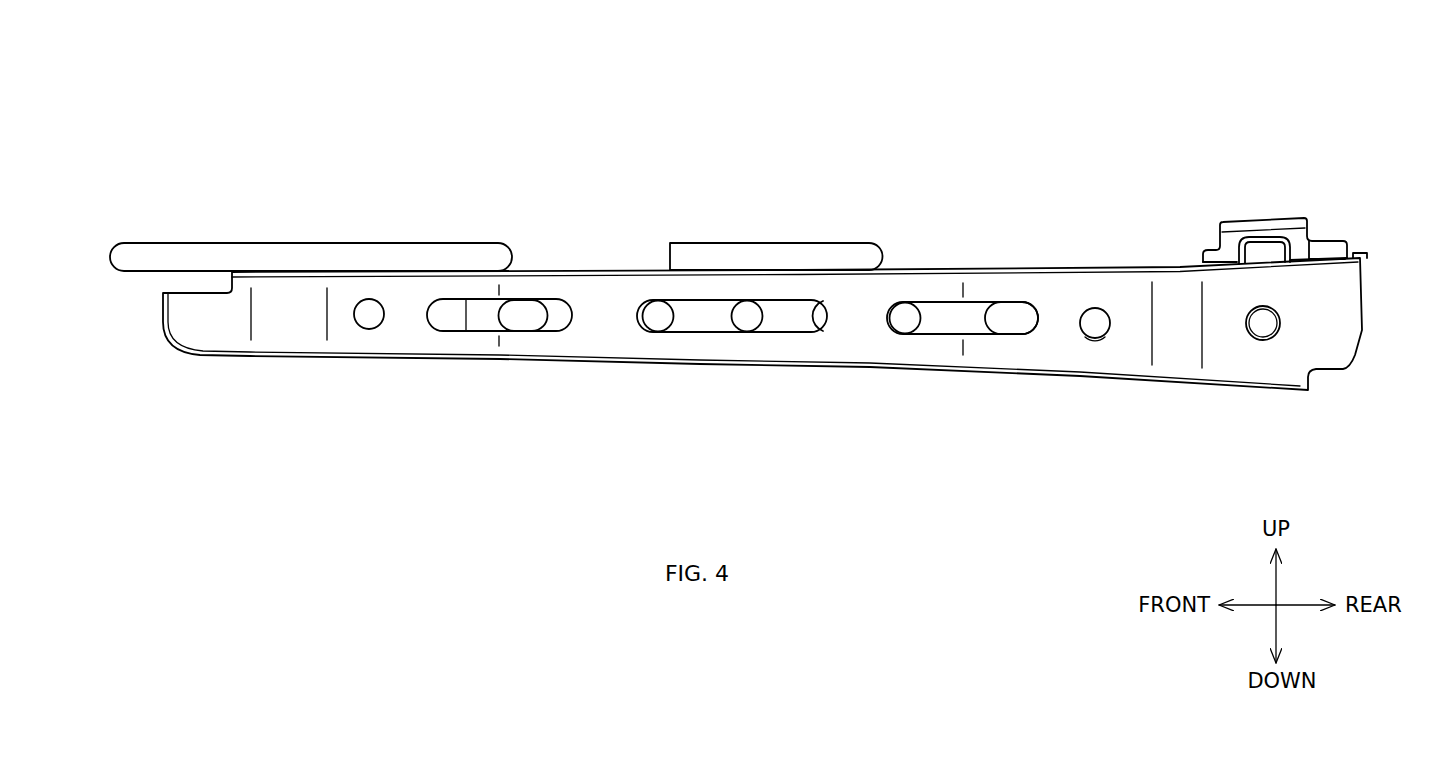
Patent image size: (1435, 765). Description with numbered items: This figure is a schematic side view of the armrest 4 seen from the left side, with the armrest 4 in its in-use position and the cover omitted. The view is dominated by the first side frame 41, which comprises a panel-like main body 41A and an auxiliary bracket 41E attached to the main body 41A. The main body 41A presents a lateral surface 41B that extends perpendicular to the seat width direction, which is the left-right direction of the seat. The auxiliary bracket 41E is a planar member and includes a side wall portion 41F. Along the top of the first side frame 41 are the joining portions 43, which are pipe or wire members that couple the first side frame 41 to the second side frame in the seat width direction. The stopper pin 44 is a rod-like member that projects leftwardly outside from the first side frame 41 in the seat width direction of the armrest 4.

The armrest 4 is at (466, 129).
The first side frame 41 is at (1368, 339).
The main body 41A is at (1118, 356).
The lateral surface 41B is at (1257, 362).
The auxiliary bracket 41E is at (1212, 226).
The side wall portion 41F is at (1308, 253).
The joining portions 43 is at (287, 250).
The stopper pin 44 is at (1247, 250).